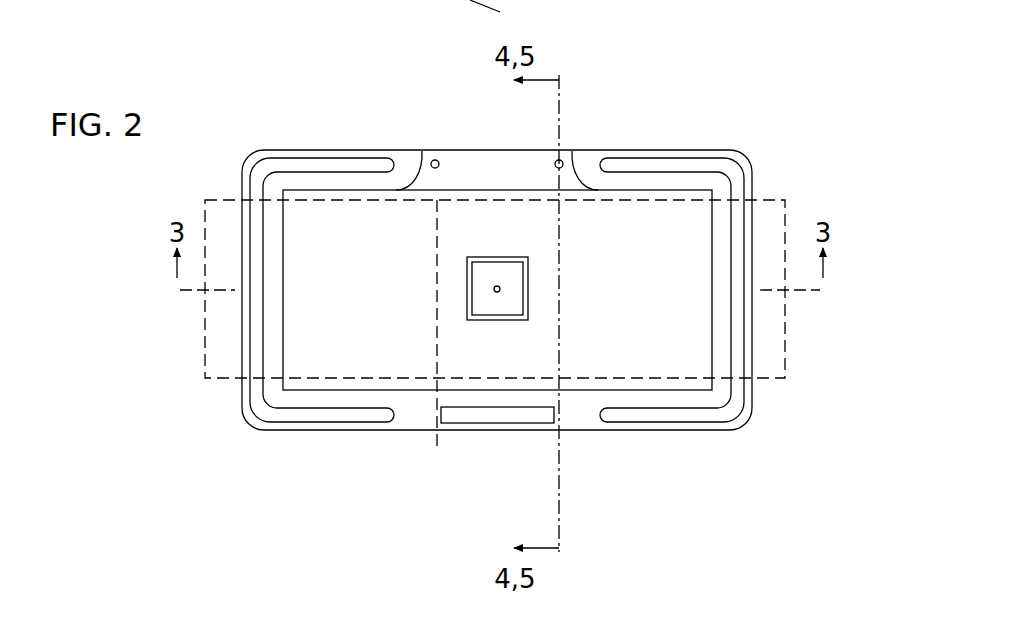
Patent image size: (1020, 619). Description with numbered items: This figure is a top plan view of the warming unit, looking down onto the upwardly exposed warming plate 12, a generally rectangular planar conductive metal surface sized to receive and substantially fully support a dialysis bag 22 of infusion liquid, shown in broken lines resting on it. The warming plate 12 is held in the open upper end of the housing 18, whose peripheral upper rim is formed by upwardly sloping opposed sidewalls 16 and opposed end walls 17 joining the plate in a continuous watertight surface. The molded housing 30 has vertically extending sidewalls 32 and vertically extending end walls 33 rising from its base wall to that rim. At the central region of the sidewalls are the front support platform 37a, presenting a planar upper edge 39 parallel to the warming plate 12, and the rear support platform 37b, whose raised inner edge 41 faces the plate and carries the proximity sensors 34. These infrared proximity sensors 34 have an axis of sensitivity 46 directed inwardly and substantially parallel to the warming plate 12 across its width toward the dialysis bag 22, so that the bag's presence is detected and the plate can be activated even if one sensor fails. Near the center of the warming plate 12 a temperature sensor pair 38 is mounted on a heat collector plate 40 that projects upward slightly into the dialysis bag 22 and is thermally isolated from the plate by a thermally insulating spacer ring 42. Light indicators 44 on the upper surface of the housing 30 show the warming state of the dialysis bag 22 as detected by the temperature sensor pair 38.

The warming plate 12 is at (382, 192).
The opposed sidewalls 16 is at (612, 182).
The opposed end walls 17 is at (272, 335).
The housing 18 is at (745, 438).
The dialysis bag 22 is at (770, 211).
The housing 30 is at (680, 440).
The vertically extending sidewalls 32 is at (366, 150).
The vertically extending end walls 33 is at (245, 228).
The proximity sensor 34 is at (556, 161).
The front support platform 37a is at (530, 425).
The rear support platform 37b is at (437, 159).
The temperature sensor pair 38 is at (497, 292).
The upper edge 39 is at (598, 416).
The heat collector plate 40 is at (520, 306).
The inner edge 41 is at (577, 178).
The thermally insulating spacer ring 42 is at (528, 284).
The light indicator 44 is at (290, 162).
The axis of sensitivity 46 is at (437, 255).